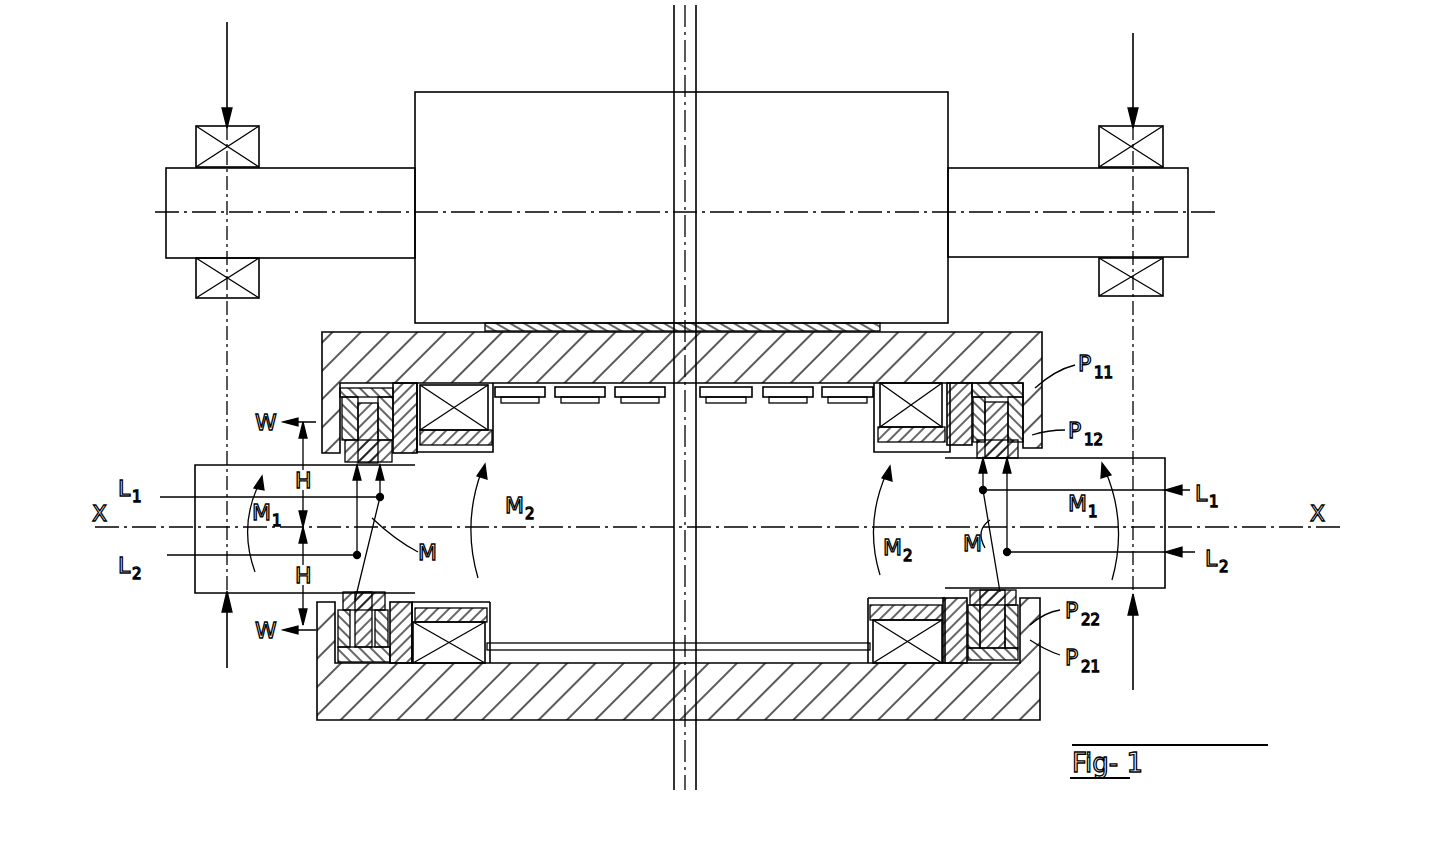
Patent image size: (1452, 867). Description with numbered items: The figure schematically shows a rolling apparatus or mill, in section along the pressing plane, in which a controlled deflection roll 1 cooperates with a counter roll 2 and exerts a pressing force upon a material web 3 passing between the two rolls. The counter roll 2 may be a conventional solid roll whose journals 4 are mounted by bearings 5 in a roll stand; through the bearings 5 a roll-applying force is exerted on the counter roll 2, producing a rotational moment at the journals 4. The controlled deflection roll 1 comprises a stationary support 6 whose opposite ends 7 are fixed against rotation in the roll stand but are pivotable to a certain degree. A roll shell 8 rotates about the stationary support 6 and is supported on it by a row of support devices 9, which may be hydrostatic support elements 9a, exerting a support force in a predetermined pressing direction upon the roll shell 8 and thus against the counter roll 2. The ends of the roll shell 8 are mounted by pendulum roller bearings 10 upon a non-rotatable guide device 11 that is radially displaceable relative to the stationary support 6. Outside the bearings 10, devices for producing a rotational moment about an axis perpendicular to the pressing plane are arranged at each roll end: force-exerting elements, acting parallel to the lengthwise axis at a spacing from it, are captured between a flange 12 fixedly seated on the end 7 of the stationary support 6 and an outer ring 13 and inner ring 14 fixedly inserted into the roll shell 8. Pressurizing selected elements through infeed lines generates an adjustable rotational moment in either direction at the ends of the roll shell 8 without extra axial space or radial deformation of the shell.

The controlled deflection roll 1 is at (1175, 440).
The counter roll 2 is at (1170, 96).
The material web 3 is at (828, 328).
The journals 4 is at (312, 185).
The bearings 5 is at (250, 147).
The stationary support 6 is at (749, 484).
The opposite ends of the stationary support 7 is at (1152, 475).
The roll shell 8 is at (975, 335).
The support devices 9 is at (628, 398).
The hydrostatic support elements 9a is at (655, 405).
The pendulum roller bearings 10 is at (885, 635).
The guide device 11 is at (435, 437).
The flange 12 is at (1000, 395).
The outer ring 13 is at (1035, 415).
The inner ring 14 is at (960, 447).